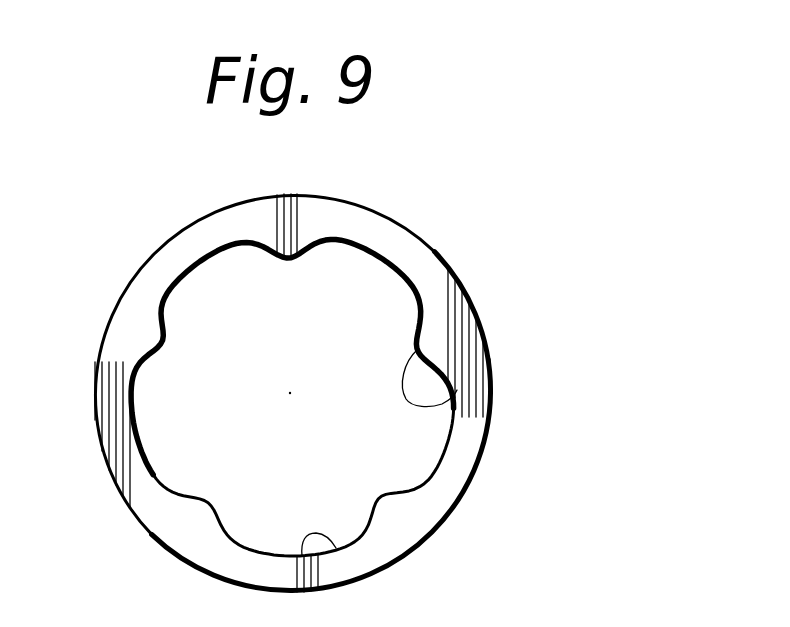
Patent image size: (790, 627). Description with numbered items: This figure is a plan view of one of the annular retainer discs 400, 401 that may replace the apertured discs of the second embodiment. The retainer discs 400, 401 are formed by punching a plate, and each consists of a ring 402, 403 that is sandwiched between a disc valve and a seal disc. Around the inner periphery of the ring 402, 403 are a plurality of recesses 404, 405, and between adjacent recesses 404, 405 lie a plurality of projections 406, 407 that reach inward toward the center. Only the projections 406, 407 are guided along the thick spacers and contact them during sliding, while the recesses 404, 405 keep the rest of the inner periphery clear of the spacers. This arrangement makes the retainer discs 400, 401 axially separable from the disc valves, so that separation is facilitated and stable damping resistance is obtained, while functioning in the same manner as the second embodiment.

The retainer disc 400 is at (356, 380).
The retainer disc 401 is at (437, 246).
The ring 402 is at (399, 397).
The ring 403 is at (458, 455).
The recess 404 is at (422, 580).
The recess 405 is at (336, 548).
The projection 406 is at (543, 360).
The projection 407 is at (442, 404).